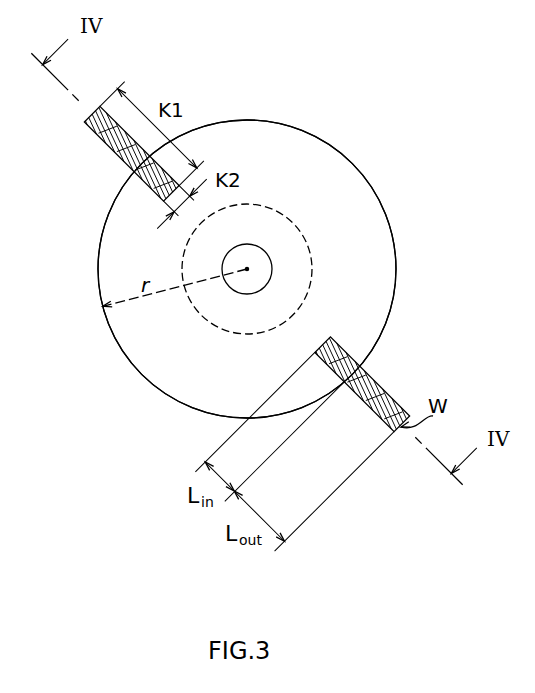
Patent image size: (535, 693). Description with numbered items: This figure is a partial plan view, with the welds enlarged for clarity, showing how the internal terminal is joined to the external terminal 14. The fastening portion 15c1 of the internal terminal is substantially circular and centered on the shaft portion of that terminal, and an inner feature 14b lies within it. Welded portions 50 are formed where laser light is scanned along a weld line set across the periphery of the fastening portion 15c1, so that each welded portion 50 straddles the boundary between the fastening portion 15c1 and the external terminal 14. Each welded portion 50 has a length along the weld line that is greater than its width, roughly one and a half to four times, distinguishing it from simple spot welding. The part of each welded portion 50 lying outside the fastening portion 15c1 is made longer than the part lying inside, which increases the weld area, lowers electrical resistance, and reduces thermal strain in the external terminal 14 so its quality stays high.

The external terminal 14 is at (427, 288).
The central portion boundary 14b is at (281, 215).
The fastening portion 15c1 is at (369, 217).
The welded portion 50 is at (385, 385).